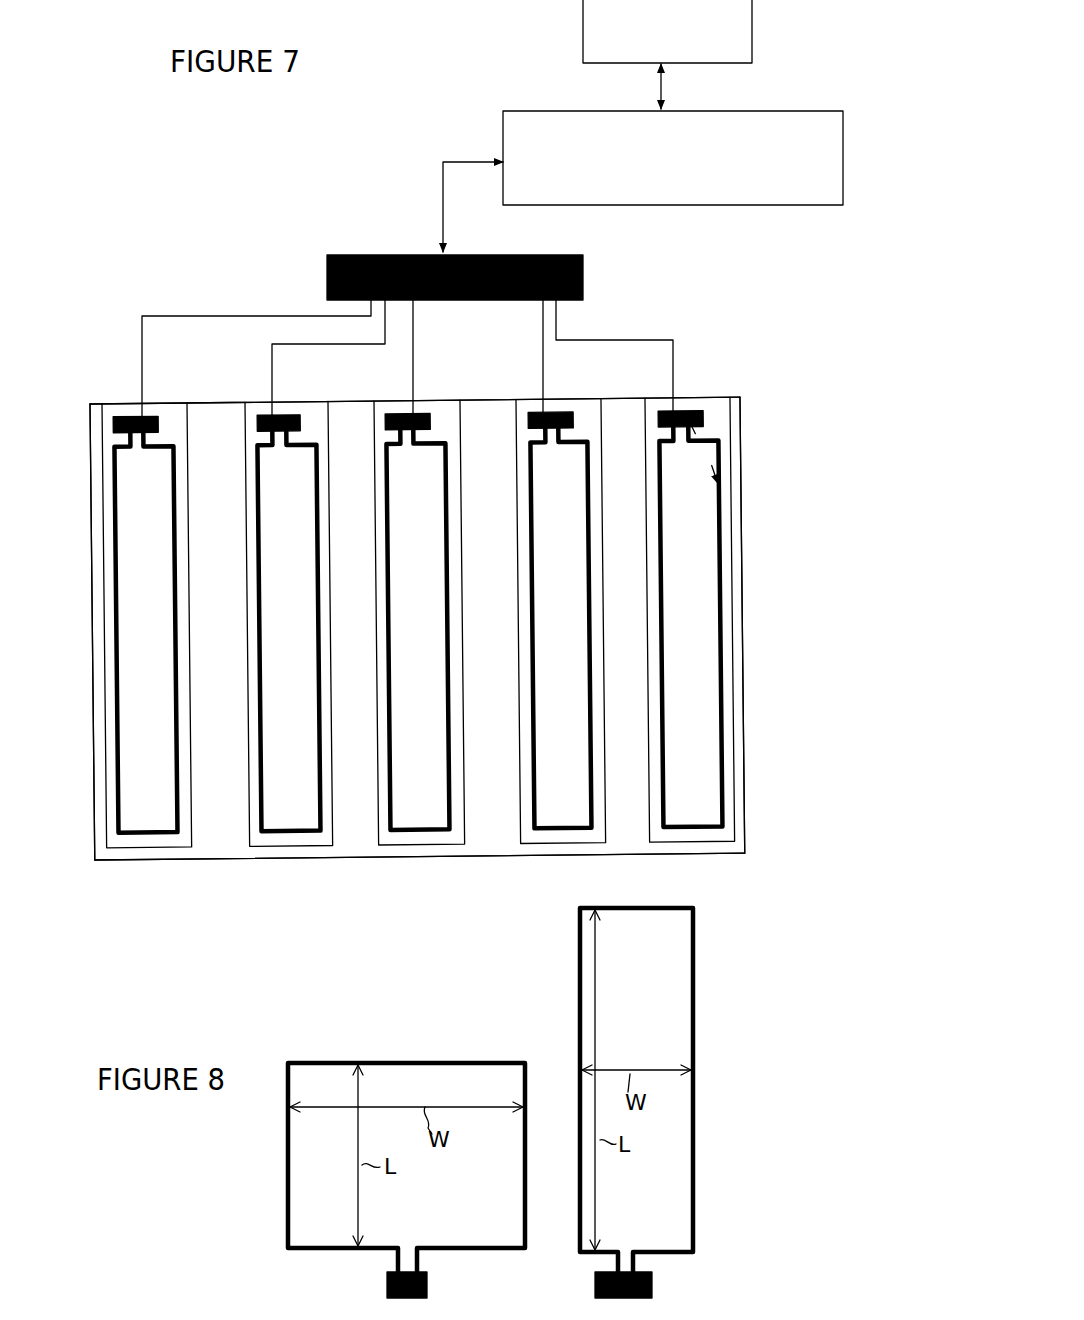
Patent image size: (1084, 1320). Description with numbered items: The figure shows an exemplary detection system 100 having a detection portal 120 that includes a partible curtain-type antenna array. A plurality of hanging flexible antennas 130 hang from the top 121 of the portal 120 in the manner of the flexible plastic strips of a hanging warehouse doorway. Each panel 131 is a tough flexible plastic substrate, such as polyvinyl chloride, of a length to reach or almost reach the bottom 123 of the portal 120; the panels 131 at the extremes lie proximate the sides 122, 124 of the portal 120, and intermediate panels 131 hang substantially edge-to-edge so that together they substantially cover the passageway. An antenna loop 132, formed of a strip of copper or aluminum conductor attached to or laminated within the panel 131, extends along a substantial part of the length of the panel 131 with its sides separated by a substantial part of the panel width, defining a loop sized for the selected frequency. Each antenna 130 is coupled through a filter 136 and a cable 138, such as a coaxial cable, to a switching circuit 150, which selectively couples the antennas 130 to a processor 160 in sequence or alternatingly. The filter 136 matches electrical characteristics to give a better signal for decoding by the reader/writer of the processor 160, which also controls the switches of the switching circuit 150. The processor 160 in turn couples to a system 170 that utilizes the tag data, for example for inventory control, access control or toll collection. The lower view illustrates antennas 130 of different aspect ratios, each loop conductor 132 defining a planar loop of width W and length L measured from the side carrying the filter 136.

In FIG. 7, the detection system 100 is at (213, 200).
In FIG. 7, the detection portal 120 is at (90, 665).
In FIG. 7, the top of portal 121 is at (630, 397).
In FIG. 7, the side of doorway 122 is at (743, 474).
In FIG. 7, the bottom of doorway 123 is at (218, 860).
In FIG. 7, the side of doorway 124 is at (93, 738).
In FIG. 7, the hanging flexible antenna 130 is at (417, 601).
In FIG. 8, the hanging flexible antenna 130 is at (533, 1095).
In FIG. 7, the panel 131 is at (248, 700).
In FIG. 7, the antenna loop 132 is at (258, 550).
In FIG. 8, the antenna loop 132 is at (491, 1043).
In FIG. 7, the filter 136 is at (262, 415).
In FIG. 8, the filter 136 is at (549, 1285).
In FIG. 7, the cable 138 is at (272, 356).
In FIG. 7, the switching circuit 150 is at (327, 278).
In FIG. 7, the processor 160 is at (536, 210).
In FIG. 7, the system 170 is at (583, 33).